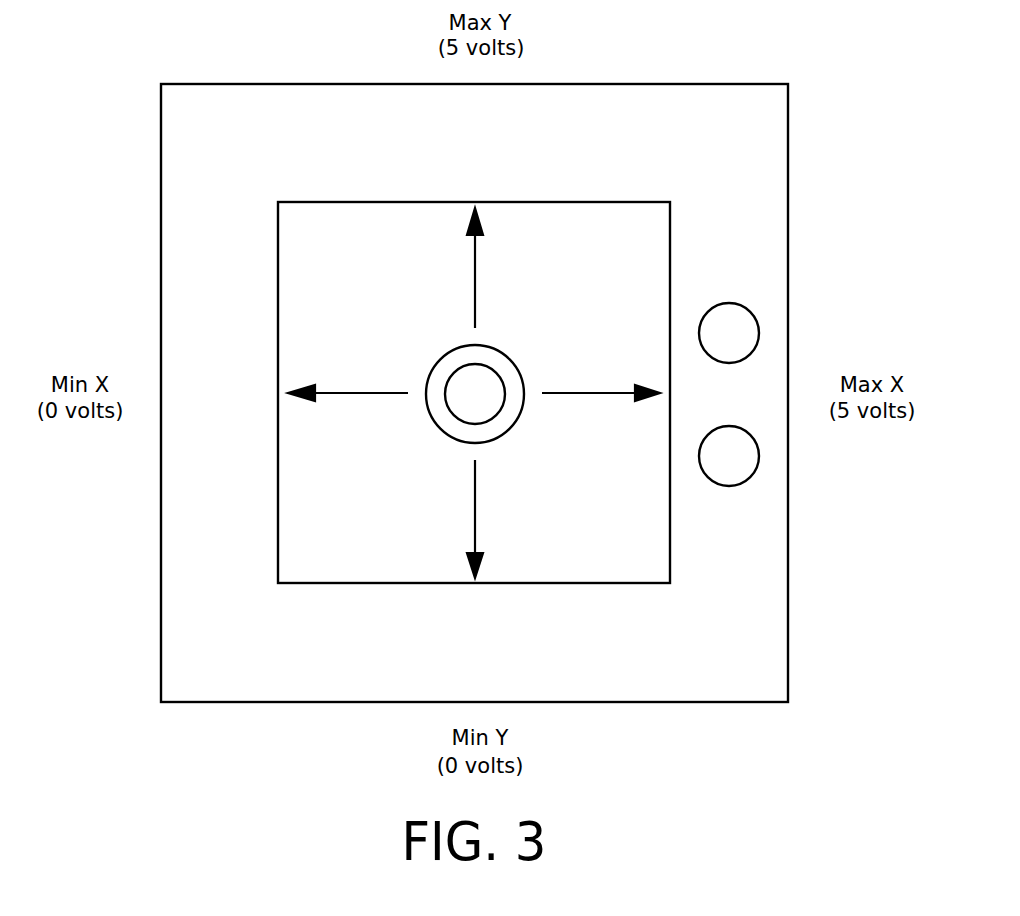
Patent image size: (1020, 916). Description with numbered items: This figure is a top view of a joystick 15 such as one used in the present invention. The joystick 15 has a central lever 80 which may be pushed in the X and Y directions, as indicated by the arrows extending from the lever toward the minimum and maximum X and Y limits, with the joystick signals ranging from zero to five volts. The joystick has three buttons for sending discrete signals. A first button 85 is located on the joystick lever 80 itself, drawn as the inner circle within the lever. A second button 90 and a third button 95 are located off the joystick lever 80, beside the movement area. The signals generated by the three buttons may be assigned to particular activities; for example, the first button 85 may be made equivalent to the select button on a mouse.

The joystick 15 is at (232, 703).
The central lever 80 is at (440, 359).
The first button 85 is at (456, 418).
The second button 90 is at (729, 303).
The third button 95 is at (741, 427).